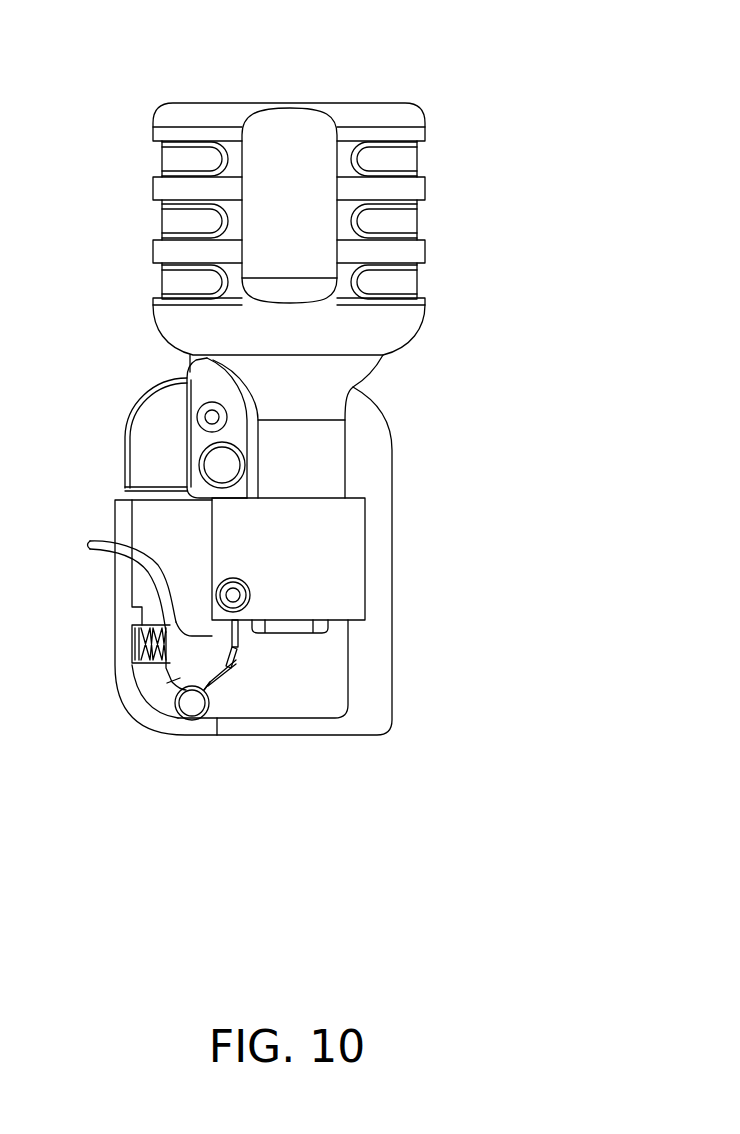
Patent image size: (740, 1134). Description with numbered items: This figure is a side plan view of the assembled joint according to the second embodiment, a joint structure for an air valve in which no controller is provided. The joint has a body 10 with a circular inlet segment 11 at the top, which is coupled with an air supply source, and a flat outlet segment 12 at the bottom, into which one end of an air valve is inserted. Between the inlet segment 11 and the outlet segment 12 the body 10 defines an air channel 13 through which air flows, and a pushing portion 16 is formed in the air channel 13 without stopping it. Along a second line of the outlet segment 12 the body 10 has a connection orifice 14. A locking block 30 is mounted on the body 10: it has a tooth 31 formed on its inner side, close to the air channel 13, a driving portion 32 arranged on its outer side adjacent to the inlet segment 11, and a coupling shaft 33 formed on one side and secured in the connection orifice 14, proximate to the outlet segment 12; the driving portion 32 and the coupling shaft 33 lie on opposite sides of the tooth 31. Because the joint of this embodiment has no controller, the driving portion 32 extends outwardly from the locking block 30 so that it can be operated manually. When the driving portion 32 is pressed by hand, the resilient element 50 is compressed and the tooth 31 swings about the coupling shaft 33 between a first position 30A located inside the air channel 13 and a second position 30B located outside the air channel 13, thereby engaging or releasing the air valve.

The body 10 is at (424, 206).
The inlet segment 11 is at (268, 103).
The outlet segment 12 is at (318, 735).
The air channel 13 is at (307, 653).
The connection orifice 14 is at (188, 722).
The pushing portion 16 is at (285, 630).
The locking block 30 is at (170, 672).
The first position 30A is at (227, 652).
The second position 30B is at (215, 693).
The tooth 31 is at (238, 624).
The driving portion 32 is at (100, 543).
The coupling shaft 33 is at (190, 705).
The resilient element 50 is at (132, 641).